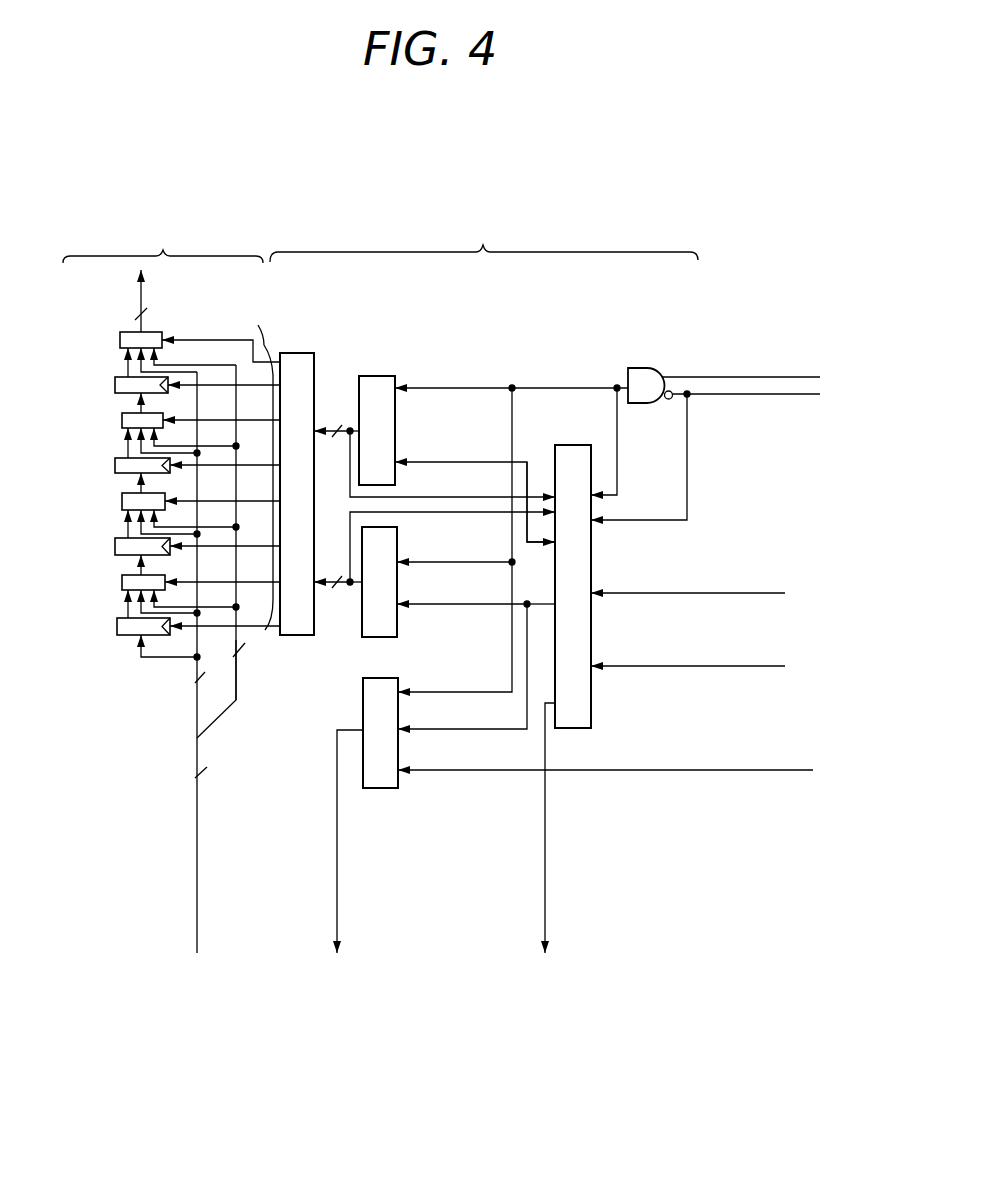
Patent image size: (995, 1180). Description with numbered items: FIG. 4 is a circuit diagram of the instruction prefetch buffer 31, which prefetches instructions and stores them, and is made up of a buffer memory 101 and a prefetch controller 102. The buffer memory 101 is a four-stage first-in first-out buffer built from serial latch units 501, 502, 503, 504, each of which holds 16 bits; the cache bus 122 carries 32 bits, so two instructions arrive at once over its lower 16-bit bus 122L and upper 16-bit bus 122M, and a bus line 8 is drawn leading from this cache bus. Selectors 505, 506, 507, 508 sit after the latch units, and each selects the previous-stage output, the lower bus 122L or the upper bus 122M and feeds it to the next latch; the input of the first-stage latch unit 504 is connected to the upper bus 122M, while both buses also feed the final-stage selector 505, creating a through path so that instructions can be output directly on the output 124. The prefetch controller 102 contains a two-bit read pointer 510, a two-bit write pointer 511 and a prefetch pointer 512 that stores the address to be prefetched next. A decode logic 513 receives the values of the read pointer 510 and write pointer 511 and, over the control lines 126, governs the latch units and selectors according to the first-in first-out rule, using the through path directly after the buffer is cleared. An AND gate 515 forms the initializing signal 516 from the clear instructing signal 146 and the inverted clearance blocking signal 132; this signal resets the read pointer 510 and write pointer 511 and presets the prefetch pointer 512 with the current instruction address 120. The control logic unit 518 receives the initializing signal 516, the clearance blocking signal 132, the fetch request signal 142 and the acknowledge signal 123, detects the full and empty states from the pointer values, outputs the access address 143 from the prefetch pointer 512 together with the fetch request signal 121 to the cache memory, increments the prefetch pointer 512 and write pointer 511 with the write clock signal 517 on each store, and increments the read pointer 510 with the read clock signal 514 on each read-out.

The buffer memory 101 is at (163, 246).
The prefetch controller 102 is at (483, 243).
The instruction prefetch buffer 31 is at (703, 308).
The instruction output line 124 is at (136, 292).
The 16-bit bus width 16 is at (201, 519).
The selector 505 is at (119, 340).
The latch unit 501 is at (114, 385).
The selector 506 is at (121, 420).
The latch unit 502 is at (114, 465).
The selector 507 is at (121, 501).
The latch unit 503 is at (114, 546).
The selector 508 is at (121, 582).
The latch unit 504 is at (116, 626).
The register control signal lines 126 is at (256, 465).
The decode logic 513 is at (310, 352).
The read pointer 510 is at (382, 375).
The write pointer 511 is at (392, 523).
The prefetch pointer 512 is at (392, 675).
The read clock signal 514 is at (475, 459).
The initializing signal 516 is at (587, 383).
The AND gate 515 is at (647, 366).
The control logic unit 518 is at (573, 443).
The clearance blocking signal 132 is at (787, 392).
The instructing signal to clear the instruction prefetch buffer 146 is at (812, 375).
The request signal for fetching instructions 142 is at (768, 592).
The acknowledge signal 123 is at (768, 666).
The instruction address 120 is at (740, 772).
The write clock signal 517 is at (452, 732).
The lower 16 bit bus 122L is at (240, 690).
The upper 16 bit bus 122M is at (197, 705).
The instruction bus 122 is at (197, 755).
The 32-bit bus width 32 is at (214, 771).
The memory bus 8 is at (197, 893).
The access address 143 is at (340, 893).
The instruction fetch request signal 121 is at (548, 893).